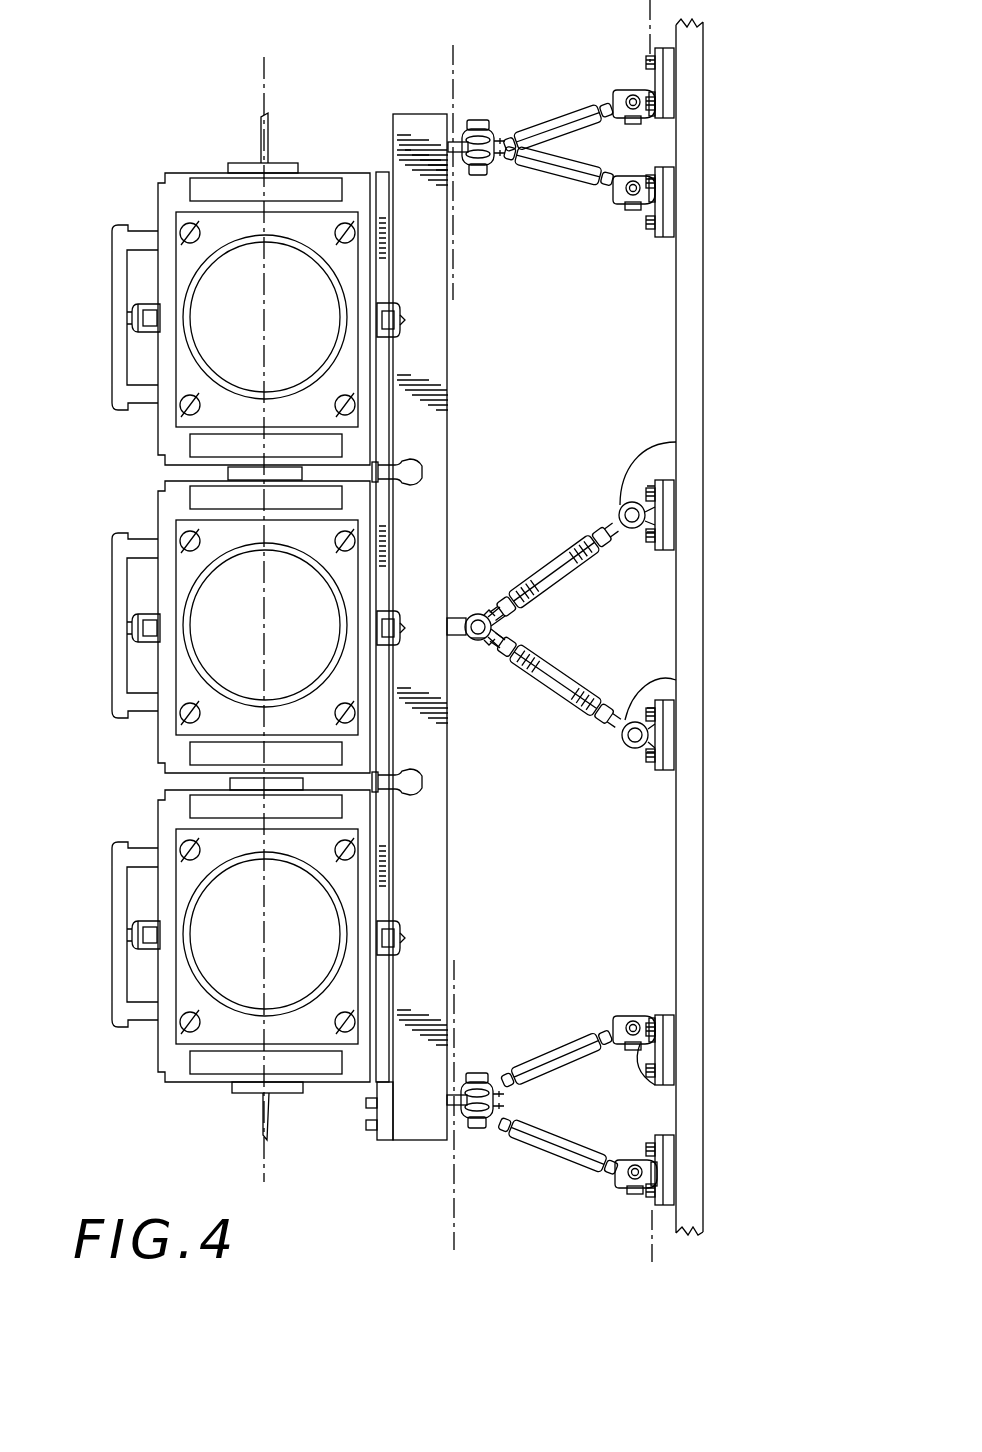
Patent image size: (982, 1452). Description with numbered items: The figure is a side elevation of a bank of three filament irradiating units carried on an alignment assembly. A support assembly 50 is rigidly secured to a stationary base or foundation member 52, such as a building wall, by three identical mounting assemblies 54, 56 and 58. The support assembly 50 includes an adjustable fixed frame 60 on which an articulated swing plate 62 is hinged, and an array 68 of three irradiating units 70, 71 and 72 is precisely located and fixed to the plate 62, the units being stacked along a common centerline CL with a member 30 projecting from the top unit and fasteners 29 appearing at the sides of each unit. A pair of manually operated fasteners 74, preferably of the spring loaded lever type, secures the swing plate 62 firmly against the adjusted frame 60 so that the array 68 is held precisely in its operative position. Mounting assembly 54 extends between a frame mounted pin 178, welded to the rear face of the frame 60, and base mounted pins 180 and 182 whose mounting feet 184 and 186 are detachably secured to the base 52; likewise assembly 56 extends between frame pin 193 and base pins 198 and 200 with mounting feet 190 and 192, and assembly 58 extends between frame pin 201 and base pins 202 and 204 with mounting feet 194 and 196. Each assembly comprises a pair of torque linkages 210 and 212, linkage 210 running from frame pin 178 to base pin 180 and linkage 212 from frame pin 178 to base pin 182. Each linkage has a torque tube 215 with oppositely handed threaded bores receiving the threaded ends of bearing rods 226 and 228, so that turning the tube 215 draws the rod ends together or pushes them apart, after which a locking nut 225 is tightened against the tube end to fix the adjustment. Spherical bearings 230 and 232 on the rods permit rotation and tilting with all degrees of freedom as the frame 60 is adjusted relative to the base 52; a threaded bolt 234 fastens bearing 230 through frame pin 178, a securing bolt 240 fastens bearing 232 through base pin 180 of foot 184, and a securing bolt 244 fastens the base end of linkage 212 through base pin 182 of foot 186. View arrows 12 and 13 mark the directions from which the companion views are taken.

The section line 12- 12 is at (607, 17).
The section line 13- 13 is at (490, 62).
The fastener bolts 29 is at (130, 310).
The shaft 30 is at (261, 142).
The support assembly 50 is at (398, 1165).
The base or foundation member 52 is at (703, 626).
The mounting assembly 54 is at (610, 618).
The mounting assembly 56 is at (613, 1074).
The mounting assembly 58 is at (617, 164).
The adjustable fixed frame 60 is at (408, 113).
The articulated plate 62 is at (380, 172).
The array 68 is at (118, 766).
The irradiating unit 70 is at (160, 420).
The irradiating unit 71 is at (160, 510).
The irradiating unit 72 is at (162, 810).
The manually operated fastener 74 is at (422, 468).
The frame mounted pin 178 is at (469, 613).
The base mounted pin 180 is at (667, 481).
The base mounted pin 182 is at (703, 688).
The mounting foot 184 is at (676, 510).
The mounting foot 186 is at (681, 740).
The mounting foot 190 is at (680, 1048).
The mounting foot 192 is at (680, 1173).
The frame mounted pin 193 is at (476, 1122).
The mounting foot 194 is at (677, 88).
The mounting foot 196 is at (674, 204).
The base mounted pin 198 is at (674, 1098).
The base mounted pin 200 is at (650, 1160).
The frame mounted pin 201 is at (469, 128).
The base mounted pin 202 is at (631, 88).
The base mounted pin 204 is at (640, 212).
The torque linkage 210 is at (555, 540).
The torque linkage 212 is at (571, 655).
The torque tube 215 is at (568, 582).
The locking nut 225 is at (621, 543).
The bearing rod 226 is at (486, 612).
The bearing rod 228 is at (620, 508).
The spherical bearing 230 is at (494, 622).
The spherical bearing 232 is at (674, 446).
The threaded bolt 234 is at (478, 642).
The securing bolt 240 is at (680, 535).
The securing bolt 244 is at (640, 748).
The centerline CL is at (263, 90).